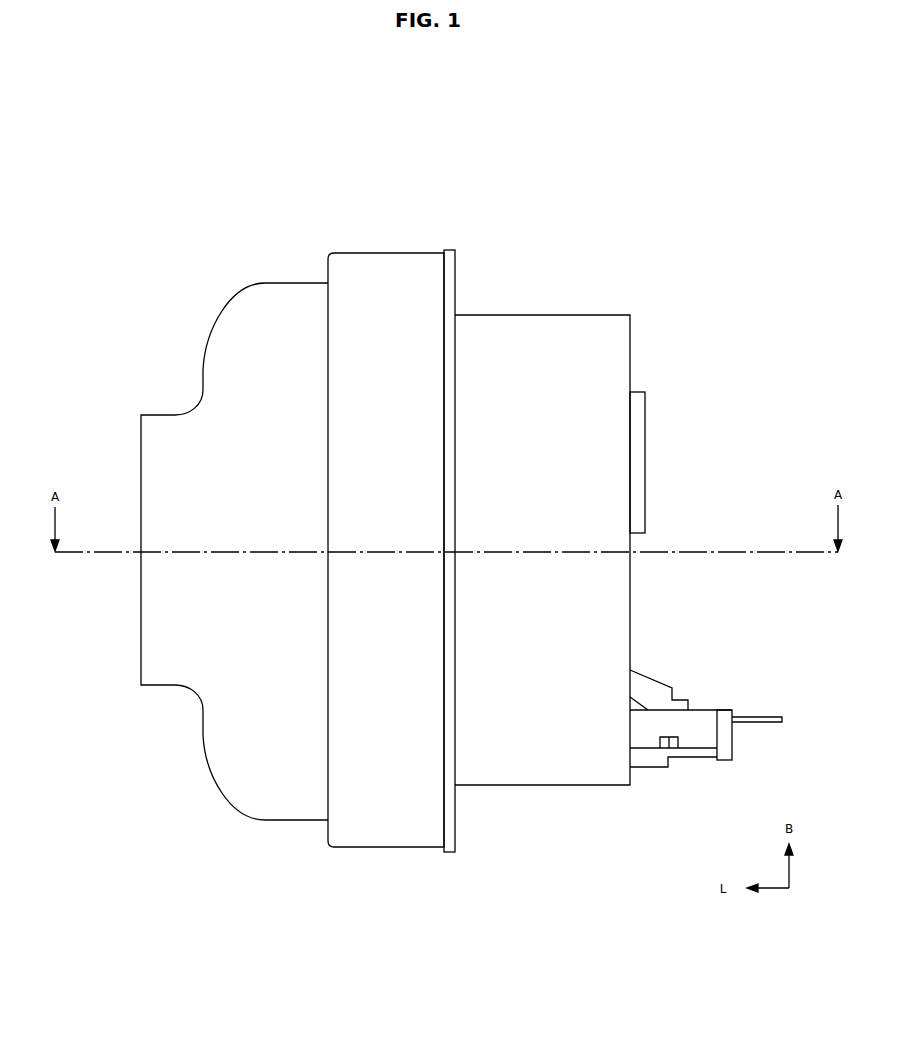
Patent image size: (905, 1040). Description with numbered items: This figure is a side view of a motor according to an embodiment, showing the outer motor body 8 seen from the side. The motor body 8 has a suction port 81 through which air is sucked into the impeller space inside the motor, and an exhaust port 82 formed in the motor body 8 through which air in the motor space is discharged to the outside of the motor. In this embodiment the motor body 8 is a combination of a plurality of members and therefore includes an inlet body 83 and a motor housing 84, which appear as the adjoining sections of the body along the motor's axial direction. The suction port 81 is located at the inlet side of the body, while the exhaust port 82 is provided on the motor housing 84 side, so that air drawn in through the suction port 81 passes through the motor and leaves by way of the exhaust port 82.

The motor body 8 is at (458, 218).
The suction port 81 is at (141, 458).
The exhaust port 82 is at (632, 632).
The inlet body 83 is at (390, 253).
The motor housing 84 is at (540, 325).